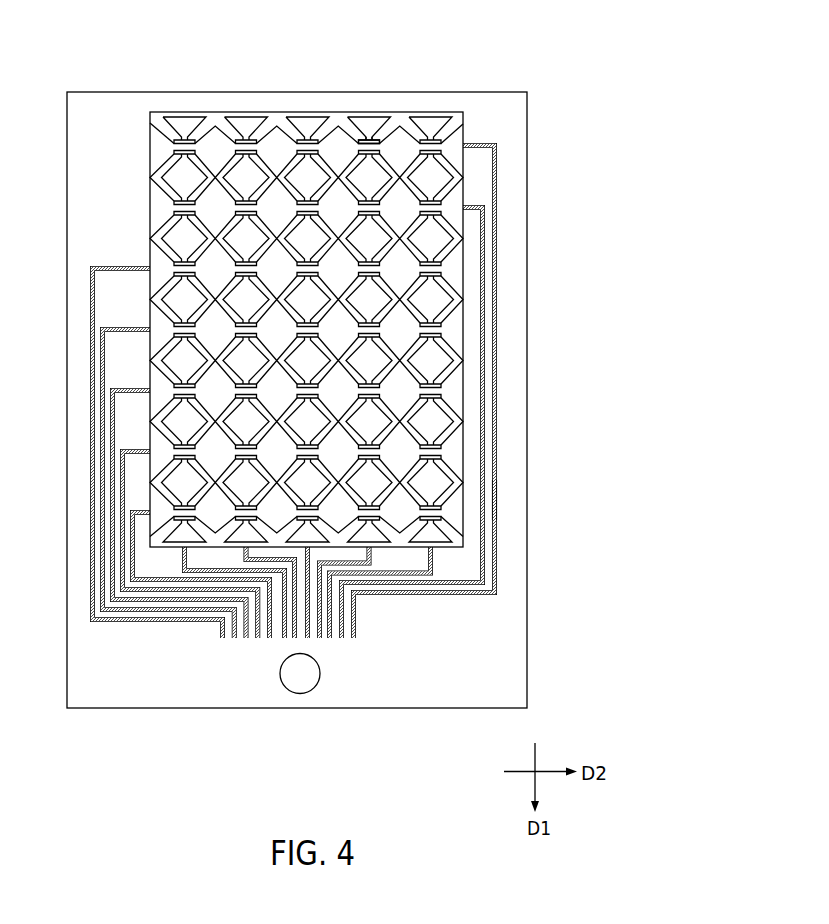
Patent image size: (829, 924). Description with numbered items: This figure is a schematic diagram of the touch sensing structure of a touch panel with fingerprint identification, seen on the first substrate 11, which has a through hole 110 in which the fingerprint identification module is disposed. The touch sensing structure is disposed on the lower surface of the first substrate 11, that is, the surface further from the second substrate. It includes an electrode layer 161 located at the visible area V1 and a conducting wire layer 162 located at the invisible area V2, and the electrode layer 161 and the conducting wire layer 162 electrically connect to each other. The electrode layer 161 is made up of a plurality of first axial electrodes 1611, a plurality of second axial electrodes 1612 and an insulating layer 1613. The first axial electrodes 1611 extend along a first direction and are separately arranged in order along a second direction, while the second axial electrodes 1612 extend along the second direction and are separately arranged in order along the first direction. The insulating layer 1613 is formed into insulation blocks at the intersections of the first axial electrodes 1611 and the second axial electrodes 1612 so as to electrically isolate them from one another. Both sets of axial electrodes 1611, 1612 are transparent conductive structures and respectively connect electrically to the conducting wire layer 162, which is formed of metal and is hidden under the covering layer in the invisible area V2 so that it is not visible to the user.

The electrode layer 161 is at (411, 52).
The first axial electrodes 1611 is at (306, 122).
The second axial electrodes 1612 is at (338, 130).
The insulating layer 1613 is at (380, 132).
The visible area V1 is at (466, 122).
The first substrate 11 is at (527, 276).
The conducting wire layer 162 is at (498, 401).
The invisible area V2 is at (512, 500).
The through hole 110 is at (310, 677).